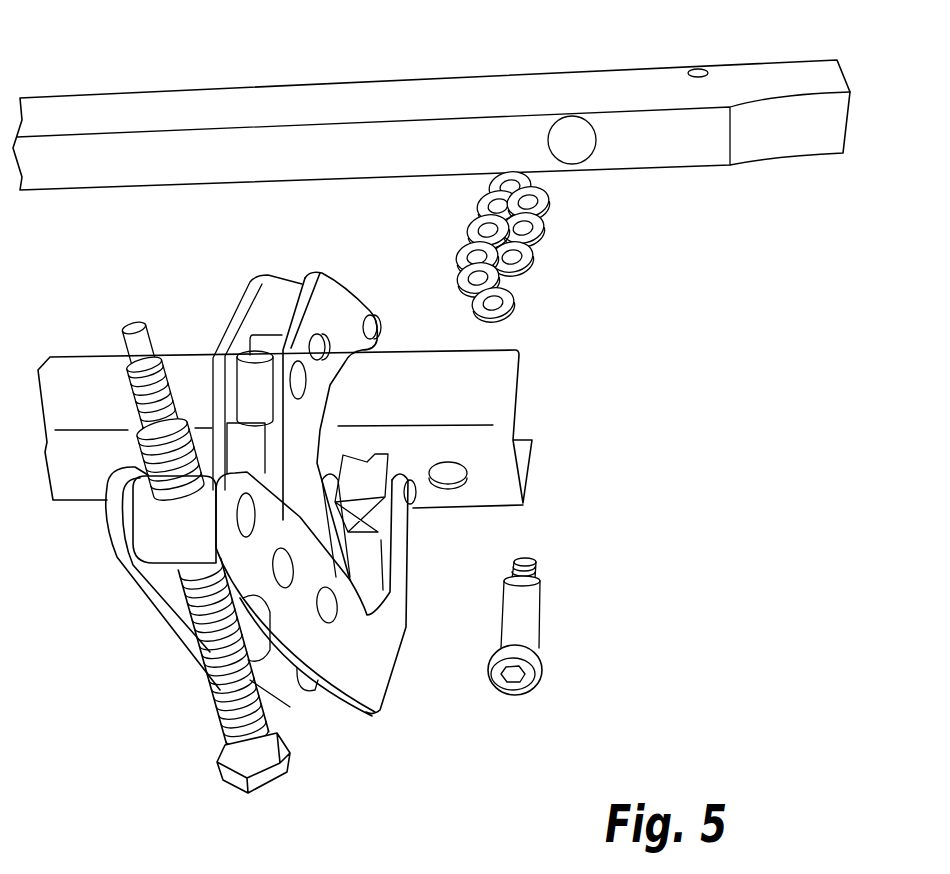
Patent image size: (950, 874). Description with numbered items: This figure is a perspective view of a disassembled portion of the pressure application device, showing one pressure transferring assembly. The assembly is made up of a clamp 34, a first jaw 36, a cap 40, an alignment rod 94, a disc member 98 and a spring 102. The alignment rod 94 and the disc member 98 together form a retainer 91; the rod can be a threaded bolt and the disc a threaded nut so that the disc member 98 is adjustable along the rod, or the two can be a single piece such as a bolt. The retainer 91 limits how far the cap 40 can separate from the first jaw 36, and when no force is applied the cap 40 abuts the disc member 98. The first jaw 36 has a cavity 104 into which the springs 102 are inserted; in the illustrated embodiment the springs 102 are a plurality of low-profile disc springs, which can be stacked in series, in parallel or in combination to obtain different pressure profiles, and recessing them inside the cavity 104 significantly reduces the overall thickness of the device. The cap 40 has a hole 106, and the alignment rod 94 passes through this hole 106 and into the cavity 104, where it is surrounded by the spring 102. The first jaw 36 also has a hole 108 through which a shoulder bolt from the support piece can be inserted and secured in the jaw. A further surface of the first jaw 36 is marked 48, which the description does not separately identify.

The clamp 34 is at (358, 676).
The first jaw 36 is at (822, 112).
The cap 40 is at (495, 438).
The rail surface 48 is at (383, 157).
The retainer 91 is at (564, 650).
The alignment rod 94 is at (527, 590).
The disc member 98 is at (530, 660).
The spring 102 is at (527, 262).
The cavity 104 is at (570, 143).
The hole 106 is at (448, 475).
The hole 108 is at (697, 69).